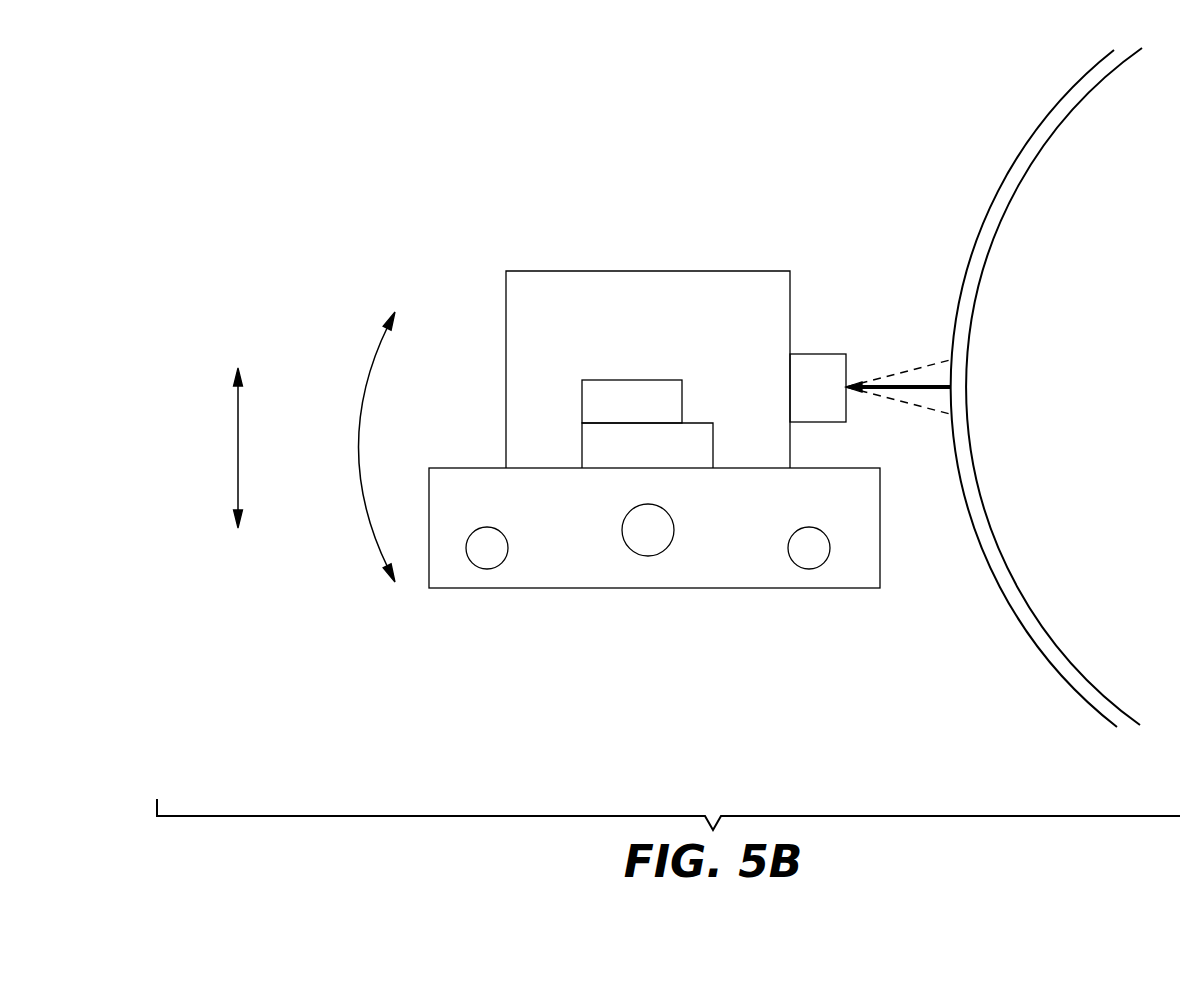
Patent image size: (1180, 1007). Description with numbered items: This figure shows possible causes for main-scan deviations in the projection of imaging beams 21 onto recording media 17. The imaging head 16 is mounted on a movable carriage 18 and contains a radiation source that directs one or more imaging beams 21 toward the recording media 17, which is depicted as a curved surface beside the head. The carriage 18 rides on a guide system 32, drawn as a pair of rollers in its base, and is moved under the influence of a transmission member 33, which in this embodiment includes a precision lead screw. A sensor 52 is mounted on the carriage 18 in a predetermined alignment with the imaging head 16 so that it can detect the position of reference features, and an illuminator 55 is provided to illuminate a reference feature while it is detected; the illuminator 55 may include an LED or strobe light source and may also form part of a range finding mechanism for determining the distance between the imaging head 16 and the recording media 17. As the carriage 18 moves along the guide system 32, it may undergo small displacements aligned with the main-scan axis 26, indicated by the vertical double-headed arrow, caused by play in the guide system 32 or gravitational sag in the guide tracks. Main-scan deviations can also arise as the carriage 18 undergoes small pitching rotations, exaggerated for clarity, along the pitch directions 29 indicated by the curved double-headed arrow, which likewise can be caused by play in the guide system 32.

The imaging head 16 is at (600, 280).
The recording media 17 is at (967, 270).
The carriage 18 is at (463, 474).
The imaging beams 21 is at (894, 390).
The main-scan axis 26 is at (237, 420).
The pitch directions 29 is at (362, 420).
The guide system 32 is at (479, 569).
The transmission member 33 is at (655, 556).
The sensor 52 is at (656, 430).
The illuminator 55 is at (600, 388).